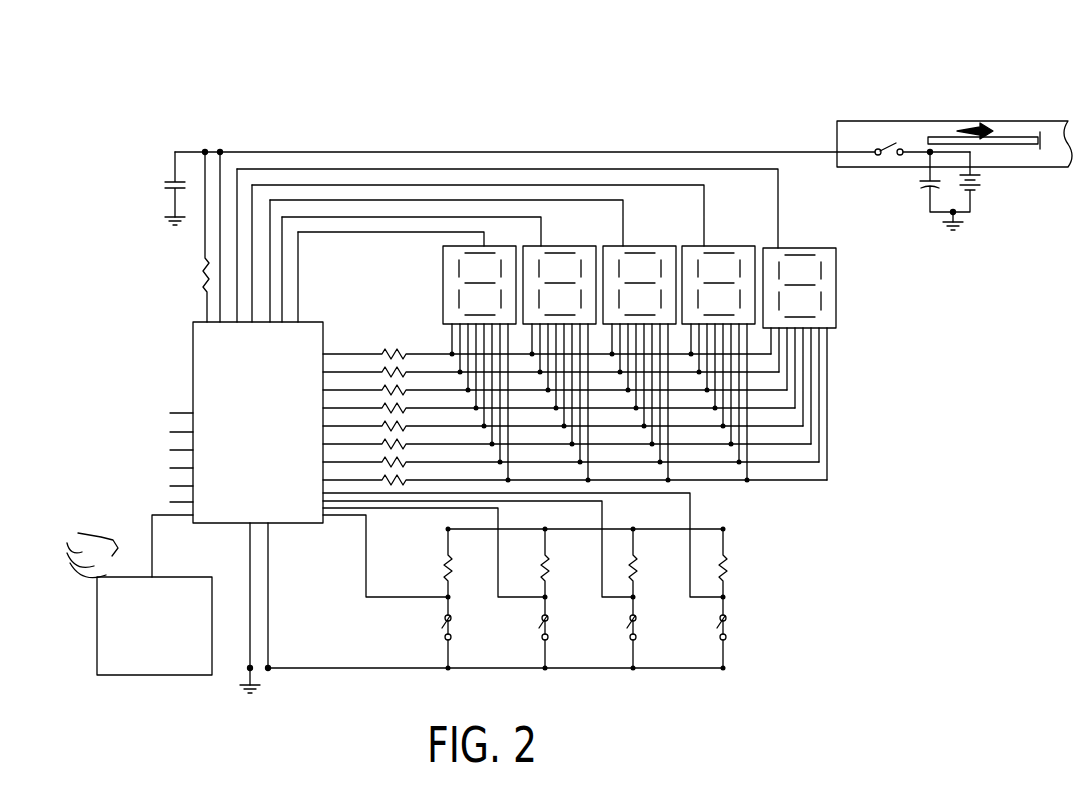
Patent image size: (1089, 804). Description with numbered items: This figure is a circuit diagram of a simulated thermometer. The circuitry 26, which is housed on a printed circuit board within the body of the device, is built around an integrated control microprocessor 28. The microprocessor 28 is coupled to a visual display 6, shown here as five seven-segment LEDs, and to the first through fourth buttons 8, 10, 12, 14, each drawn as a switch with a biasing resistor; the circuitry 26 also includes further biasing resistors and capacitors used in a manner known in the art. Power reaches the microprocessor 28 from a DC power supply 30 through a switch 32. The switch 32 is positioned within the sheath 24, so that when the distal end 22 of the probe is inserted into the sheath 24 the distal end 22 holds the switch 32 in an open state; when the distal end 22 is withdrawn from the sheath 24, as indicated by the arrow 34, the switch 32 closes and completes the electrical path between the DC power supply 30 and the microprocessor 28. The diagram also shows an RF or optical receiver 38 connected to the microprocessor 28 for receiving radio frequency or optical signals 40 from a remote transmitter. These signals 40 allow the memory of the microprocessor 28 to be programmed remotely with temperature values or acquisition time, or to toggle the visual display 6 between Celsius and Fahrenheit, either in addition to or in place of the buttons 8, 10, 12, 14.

The visual display 6 is at (843, 297).
The first button 8 is at (442, 628).
The second button 10 is at (539, 628).
The third button 12 is at (627, 628).
The fourth button 14 is at (717, 628).
The distal end of probe 22 is at (1030, 137).
The sheath 24 is at (857, 121).
The circuitry 26 is at (163, 181).
The integrated control microprocessor 28 is at (270, 434).
The DC power supply 30 is at (985, 208).
The switch 32 is at (891, 160).
The arrow 34 is at (962, 128).
The RF or optical receiver 38 is at (162, 677).
The radio frequency or optical signals 40 is at (103, 537).